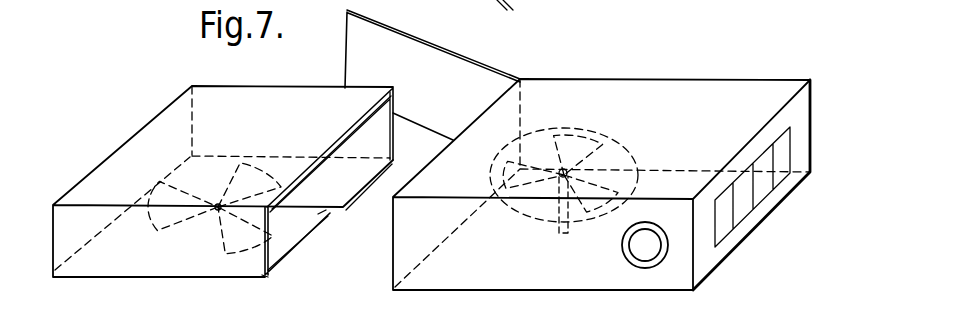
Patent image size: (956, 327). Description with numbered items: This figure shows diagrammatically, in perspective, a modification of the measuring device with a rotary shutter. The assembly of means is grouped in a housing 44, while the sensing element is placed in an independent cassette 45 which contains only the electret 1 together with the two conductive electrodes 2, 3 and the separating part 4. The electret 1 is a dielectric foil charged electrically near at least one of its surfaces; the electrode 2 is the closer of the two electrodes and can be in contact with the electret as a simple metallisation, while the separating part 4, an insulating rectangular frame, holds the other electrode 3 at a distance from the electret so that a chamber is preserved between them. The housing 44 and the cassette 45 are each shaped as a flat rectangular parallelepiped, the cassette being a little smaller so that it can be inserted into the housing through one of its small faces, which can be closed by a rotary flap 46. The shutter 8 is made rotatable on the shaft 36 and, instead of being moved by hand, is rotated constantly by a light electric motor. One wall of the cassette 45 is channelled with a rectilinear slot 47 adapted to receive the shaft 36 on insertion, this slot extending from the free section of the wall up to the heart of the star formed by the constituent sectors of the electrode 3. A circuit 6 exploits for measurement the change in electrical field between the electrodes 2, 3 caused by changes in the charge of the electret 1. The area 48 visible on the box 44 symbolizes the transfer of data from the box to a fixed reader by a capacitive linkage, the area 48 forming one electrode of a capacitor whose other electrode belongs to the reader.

The electret 1 is at (317, 163).
The conductive electrode 2 is at (338, 138).
The conductive electrode 3 is at (277, 249).
The separating part 4 is at (265, 276).
The circuit 6 is at (748, 215).
The shutter 8 is at (610, 158).
The shaft 36 is at (558, 230).
The housing 44 is at (675, 97).
The cassette 45 is at (115, 177).
The rotary flap 46 is at (475, 77).
The rectilinear slot 47 is at (320, 214).
The area 48 is at (642, 247).